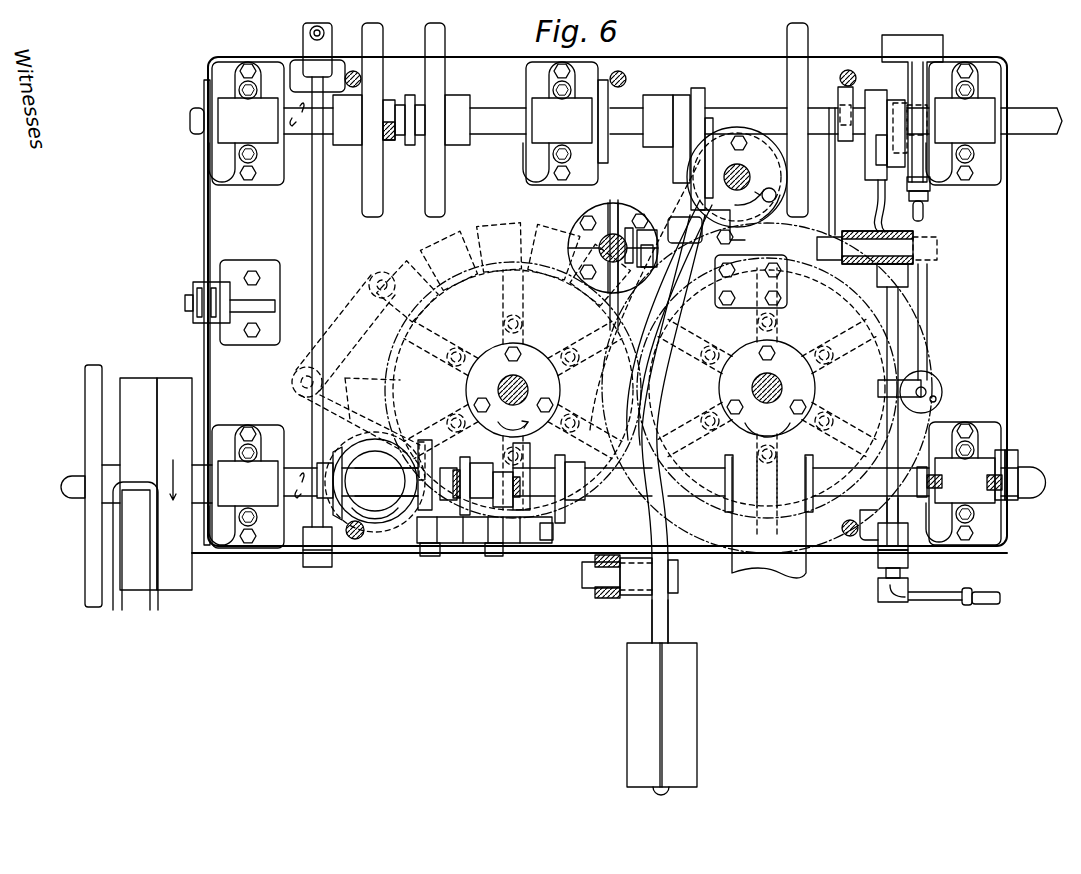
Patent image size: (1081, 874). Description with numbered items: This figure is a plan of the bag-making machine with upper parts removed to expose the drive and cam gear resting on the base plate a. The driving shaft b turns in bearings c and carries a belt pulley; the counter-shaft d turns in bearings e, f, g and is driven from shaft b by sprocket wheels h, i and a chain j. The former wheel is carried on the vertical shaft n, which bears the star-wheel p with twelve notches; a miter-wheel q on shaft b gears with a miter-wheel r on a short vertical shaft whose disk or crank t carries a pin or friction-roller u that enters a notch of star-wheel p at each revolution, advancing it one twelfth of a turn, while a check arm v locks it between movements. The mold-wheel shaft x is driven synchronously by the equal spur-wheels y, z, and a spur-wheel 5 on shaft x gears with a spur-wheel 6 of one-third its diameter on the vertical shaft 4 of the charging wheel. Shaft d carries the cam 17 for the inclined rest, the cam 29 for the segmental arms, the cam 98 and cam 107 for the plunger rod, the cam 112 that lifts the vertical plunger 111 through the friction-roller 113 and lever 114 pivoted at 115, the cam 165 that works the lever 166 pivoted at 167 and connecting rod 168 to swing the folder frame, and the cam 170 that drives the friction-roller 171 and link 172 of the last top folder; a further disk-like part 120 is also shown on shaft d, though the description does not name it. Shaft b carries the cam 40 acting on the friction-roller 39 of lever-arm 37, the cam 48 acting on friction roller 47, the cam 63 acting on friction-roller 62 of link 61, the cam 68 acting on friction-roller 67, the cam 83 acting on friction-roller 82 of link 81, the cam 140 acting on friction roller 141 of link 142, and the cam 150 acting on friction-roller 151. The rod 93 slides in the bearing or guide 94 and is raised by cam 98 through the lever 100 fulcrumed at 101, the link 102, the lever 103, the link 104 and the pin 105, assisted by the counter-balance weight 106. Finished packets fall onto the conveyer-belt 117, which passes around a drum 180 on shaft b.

The base plate a is at (1000, 250).
The driving shaft b is at (67, 487).
The bearings c is at (1000, 505).
The counter-shaft d is at (725, 110).
The bearing e is at (963, 123).
The bearing f is at (574, 123).
The bearing g is at (178, 124).
The sprocket wheel h is at (148, 487).
The sprocket wheel i is at (205, 155).
The chain j is at (205, 345).
The star-wheel p is at (500, 230).
The vertical shaft n is at (470, 380).
The miter-wheel q is at (312, 460).
The miter-wheel r is at (375, 482).
The disk or crank t is at (338, 440).
The pin or friction-roller u is at (410, 530).
The check arm v is at (360, 320).
The vertical shaft x is at (760, 370).
The spur-wheel y is at (412, 394).
The spur-wheel z is at (835, 290).
The vertical shaft 4 is at (737, 177).
The spur-wheel 5 is at (605, 380).
The spur-wheel 6 is at (780, 214).
The cam 17 is at (380, 30).
The cam 29 is at (445, 35).
The lever-arm 37 is at (550, 540).
The friction-roller 39 is at (553, 535).
The cam 40 is at (560, 455).
The friction roller 47 is at (465, 545).
The cam 48 is at (483, 463).
The link 61 is at (466, 457).
The friction-roller 62 is at (450, 468).
The cam 63 is at (445, 440).
The friction-roller 67 is at (415, 480).
The cam 68 is at (425, 440).
The link 81 is at (500, 490).
The friction-roller 82 is at (522, 470).
The cam 83 is at (513, 414).
The rod 93 is at (595, 205).
The bearing or guide 94 is at (580, 273).
The cam 98 is at (672, 95).
The lever 100 is at (665, 385).
The fulcrum 101 is at (660, 215).
The link 102 is at (610, 410).
The lever 103 is at (600, 575).
The link 104 is at (640, 225).
The pin 105 is at (700, 232).
The counter-balance weight 106 is at (635, 682).
The cam 107 is at (700, 117).
The vertical plunger 111 is at (920, 385).
The cam 112 is at (848, 70).
The friction-roller 113 is at (838, 105).
The lever 114 is at (832, 180).
The pivot 115 is at (905, 235).
The conveyer-belt 117 is at (800, 565).
The bar 120 is at (787, 35).
The cam 140 is at (1007, 530).
The friction roller 141 is at (1010, 468).
The link 142 is at (990, 468).
The cam 150 is at (920, 530).
The friction-roller 151 is at (935, 480).
The cam 165 is at (903, 153).
The lever 166 is at (915, 165).
The pivot 167 is at (943, 45).
The connecting rod 168 is at (925, 208).
The cam 170 is at (880, 95).
The friction-roller 171 is at (887, 155).
The link 172 is at (878, 215).
The drum 180 is at (813, 460).